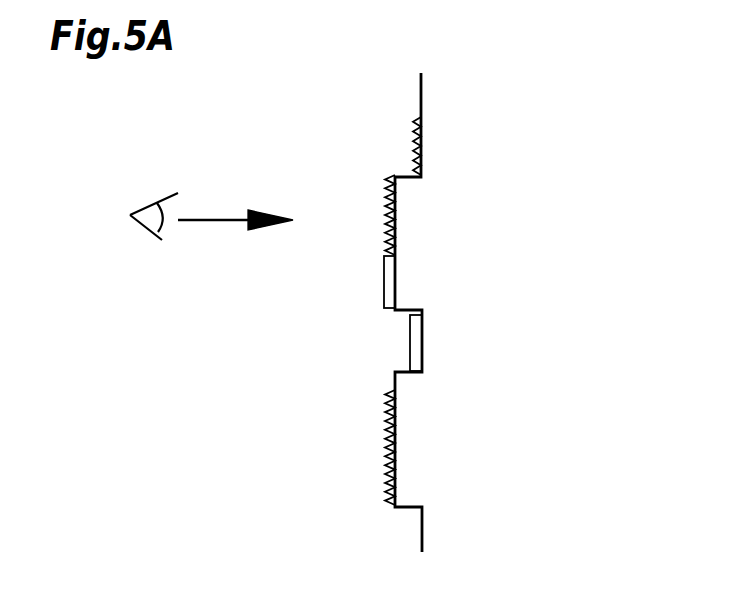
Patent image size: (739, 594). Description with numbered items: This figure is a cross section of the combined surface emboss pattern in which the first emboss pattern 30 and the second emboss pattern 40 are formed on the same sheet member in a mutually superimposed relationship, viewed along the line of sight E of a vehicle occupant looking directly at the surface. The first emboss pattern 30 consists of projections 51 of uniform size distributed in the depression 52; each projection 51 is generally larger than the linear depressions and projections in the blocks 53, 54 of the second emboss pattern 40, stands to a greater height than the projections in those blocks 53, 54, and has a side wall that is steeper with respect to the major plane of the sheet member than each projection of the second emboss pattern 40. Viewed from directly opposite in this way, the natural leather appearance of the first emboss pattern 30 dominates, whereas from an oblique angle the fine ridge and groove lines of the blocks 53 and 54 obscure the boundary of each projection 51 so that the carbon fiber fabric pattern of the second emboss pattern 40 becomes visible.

The first emboss pattern 30 is at (528, 180).
The second emboss pattern 40 is at (335, 107).
The projection 51 is at (411, 250).
The depression 52 is at (416, 352).
The block 53 is at (416, 150).
The block 54 is at (389, 289).
The line of sight E is at (146, 198).